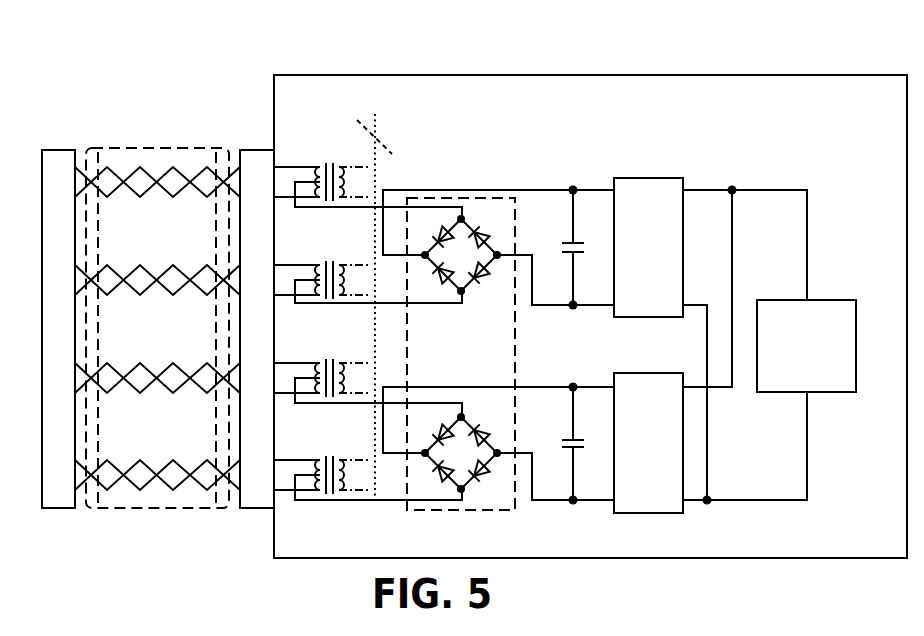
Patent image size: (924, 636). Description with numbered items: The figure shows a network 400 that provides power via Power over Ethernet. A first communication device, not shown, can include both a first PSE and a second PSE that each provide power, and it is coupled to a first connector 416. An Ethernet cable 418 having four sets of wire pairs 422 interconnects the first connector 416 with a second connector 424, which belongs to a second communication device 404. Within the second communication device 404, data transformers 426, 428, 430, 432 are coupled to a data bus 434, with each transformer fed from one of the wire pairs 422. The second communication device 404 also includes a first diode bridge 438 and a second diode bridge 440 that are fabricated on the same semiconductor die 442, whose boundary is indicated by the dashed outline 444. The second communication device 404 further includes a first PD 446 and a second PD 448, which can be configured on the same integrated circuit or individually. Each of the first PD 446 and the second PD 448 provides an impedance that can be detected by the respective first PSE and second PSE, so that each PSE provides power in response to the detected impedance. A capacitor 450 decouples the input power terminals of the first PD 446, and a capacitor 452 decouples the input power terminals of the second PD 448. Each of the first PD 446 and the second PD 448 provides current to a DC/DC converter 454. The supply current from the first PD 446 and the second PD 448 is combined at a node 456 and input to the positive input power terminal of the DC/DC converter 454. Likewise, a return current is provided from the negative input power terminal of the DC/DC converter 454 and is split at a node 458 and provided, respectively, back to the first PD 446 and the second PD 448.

The network 400 is at (86, 44).
The second communication device 404 is at (884, 112).
The first connector 416 is at (60, 150).
The Ethernet cable 418 is at (147, 148).
The wire pairs 422 is at (200, 198).
The second connector 424 is at (267, 150).
The data transformer 426 is at (286, 167).
The data transformer 428 is at (286, 265).
The data transformer 430 is at (284, 363).
The data transformer 432 is at (286, 460).
The data bus 434 is at (383, 142).
The first diode bridge 438 is at (497, 297).
The second diode bridge 440 is at (501, 410).
The semiconductor die 442 is at (470, 198).
The rectifier module boundary 444 is at (478, 512).
The first PD 446 is at (668, 178).
The second PD 448 is at (668, 513).
The capacitor 450 is at (573, 168).
The capacitor 452 is at (573, 530).
The DC/DC converter 454 is at (820, 300).
The node 456 is at (758, 168).
The node 458 is at (758, 524).